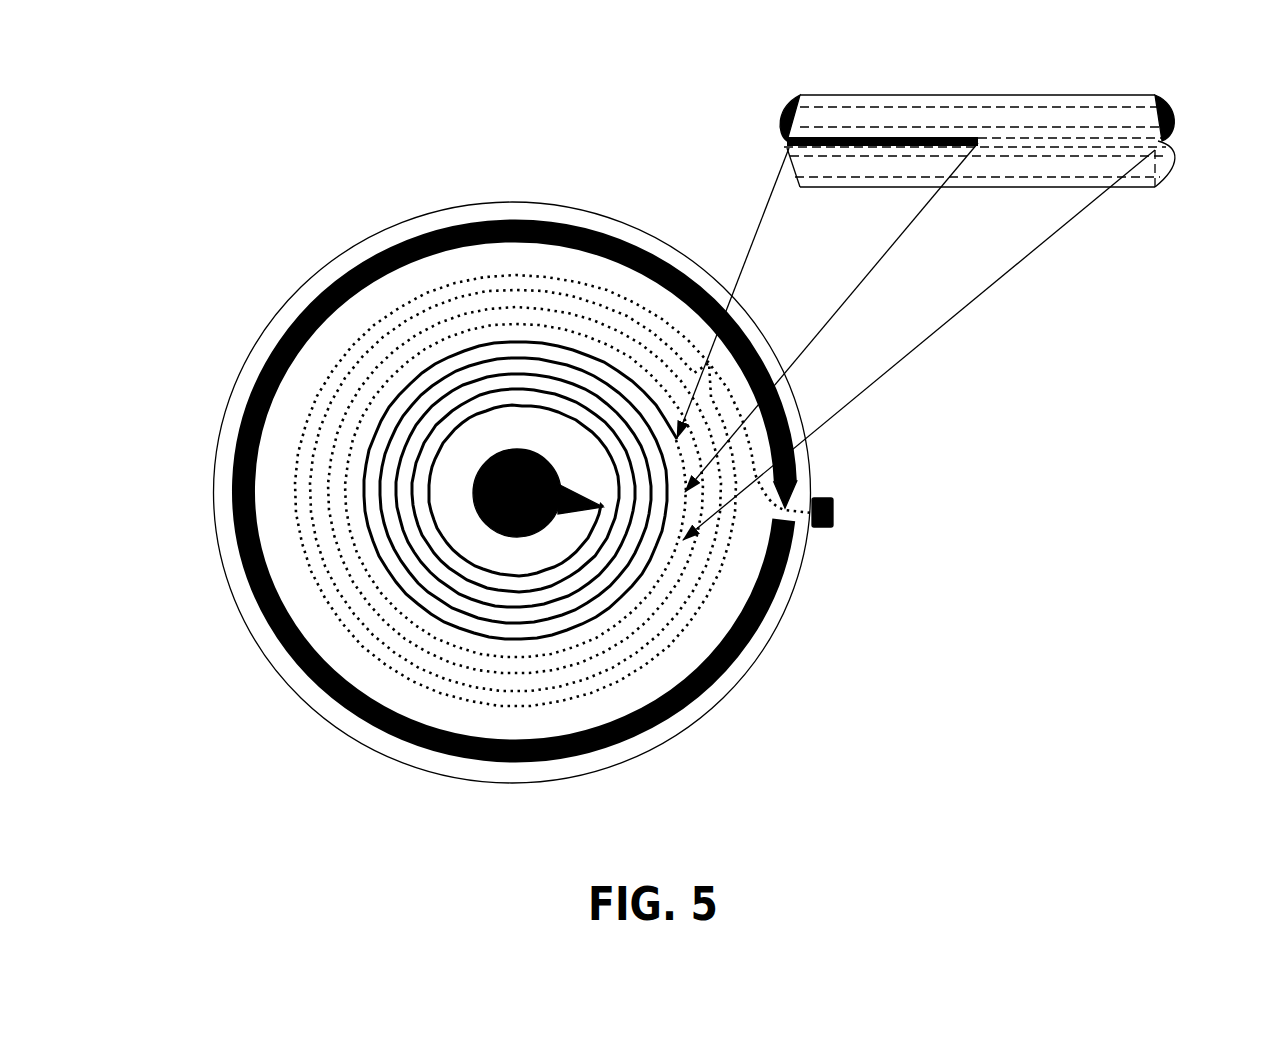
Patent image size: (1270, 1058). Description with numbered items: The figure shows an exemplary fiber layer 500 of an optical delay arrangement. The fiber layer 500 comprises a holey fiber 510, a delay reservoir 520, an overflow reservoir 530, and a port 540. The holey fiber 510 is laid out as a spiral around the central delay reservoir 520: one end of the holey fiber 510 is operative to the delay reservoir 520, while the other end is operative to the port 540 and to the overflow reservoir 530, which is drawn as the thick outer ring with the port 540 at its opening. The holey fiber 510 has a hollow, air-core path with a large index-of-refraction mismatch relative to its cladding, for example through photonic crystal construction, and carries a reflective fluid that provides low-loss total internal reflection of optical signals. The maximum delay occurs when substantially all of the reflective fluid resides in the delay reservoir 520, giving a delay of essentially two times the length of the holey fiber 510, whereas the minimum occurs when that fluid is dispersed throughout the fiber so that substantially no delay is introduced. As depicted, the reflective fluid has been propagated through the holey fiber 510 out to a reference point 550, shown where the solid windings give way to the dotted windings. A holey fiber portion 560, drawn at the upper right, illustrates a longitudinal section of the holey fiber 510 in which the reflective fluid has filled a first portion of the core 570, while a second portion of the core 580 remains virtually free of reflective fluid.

The fiber layer 500 is at (330, 132).
The holey fiber 510 is at (668, 642).
The delay reservoir 520 is at (500, 467).
The overflow reservoir 530 is at (326, 680).
The port 540 is at (822, 524).
The reference point 550 is at (688, 483).
The holey fiber portion 560 is at (1082, 95).
The first portion of the core 570 is at (898, 238).
The second portion of the core 580 is at (1047, 238).